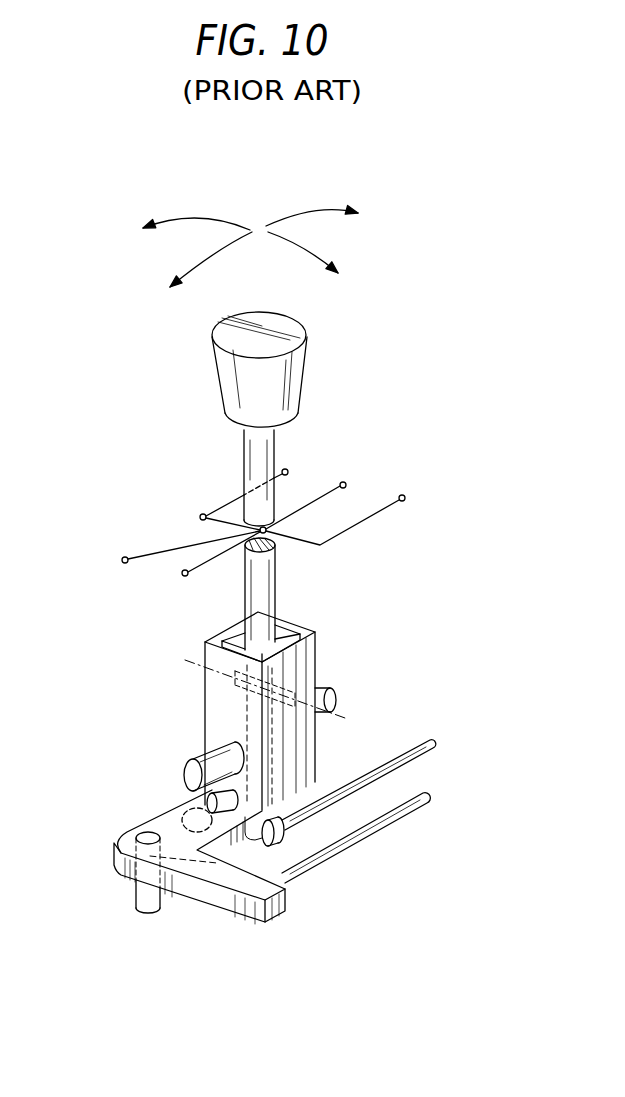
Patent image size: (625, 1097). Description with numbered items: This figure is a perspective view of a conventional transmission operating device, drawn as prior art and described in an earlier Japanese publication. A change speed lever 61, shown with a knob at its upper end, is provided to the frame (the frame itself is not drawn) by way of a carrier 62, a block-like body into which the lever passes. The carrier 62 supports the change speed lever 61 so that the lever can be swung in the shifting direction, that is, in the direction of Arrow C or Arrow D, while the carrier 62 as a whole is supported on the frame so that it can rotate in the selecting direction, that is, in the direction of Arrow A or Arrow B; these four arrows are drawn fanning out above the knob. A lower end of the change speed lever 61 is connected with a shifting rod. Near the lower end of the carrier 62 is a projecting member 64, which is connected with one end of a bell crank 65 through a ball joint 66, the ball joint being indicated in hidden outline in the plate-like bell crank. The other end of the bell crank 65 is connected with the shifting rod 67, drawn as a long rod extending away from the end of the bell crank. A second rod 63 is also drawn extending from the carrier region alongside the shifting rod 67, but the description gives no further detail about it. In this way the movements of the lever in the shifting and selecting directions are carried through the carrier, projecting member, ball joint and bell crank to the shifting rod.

The change speed lever 61 is at (262, 452).
The carrier 62 is at (303, 652).
The pivot rod 63 is at (423, 753).
The projecting member 64 is at (207, 801).
The bell crank 65 is at (225, 880).
The ball joint 66 is at (180, 814).
The shifting rod 67 is at (378, 823).
The Arrow A is at (195, 217).
The Arrow B is at (312, 255).
The Arrow C is at (212, 253).
The Arrow D is at (317, 212).